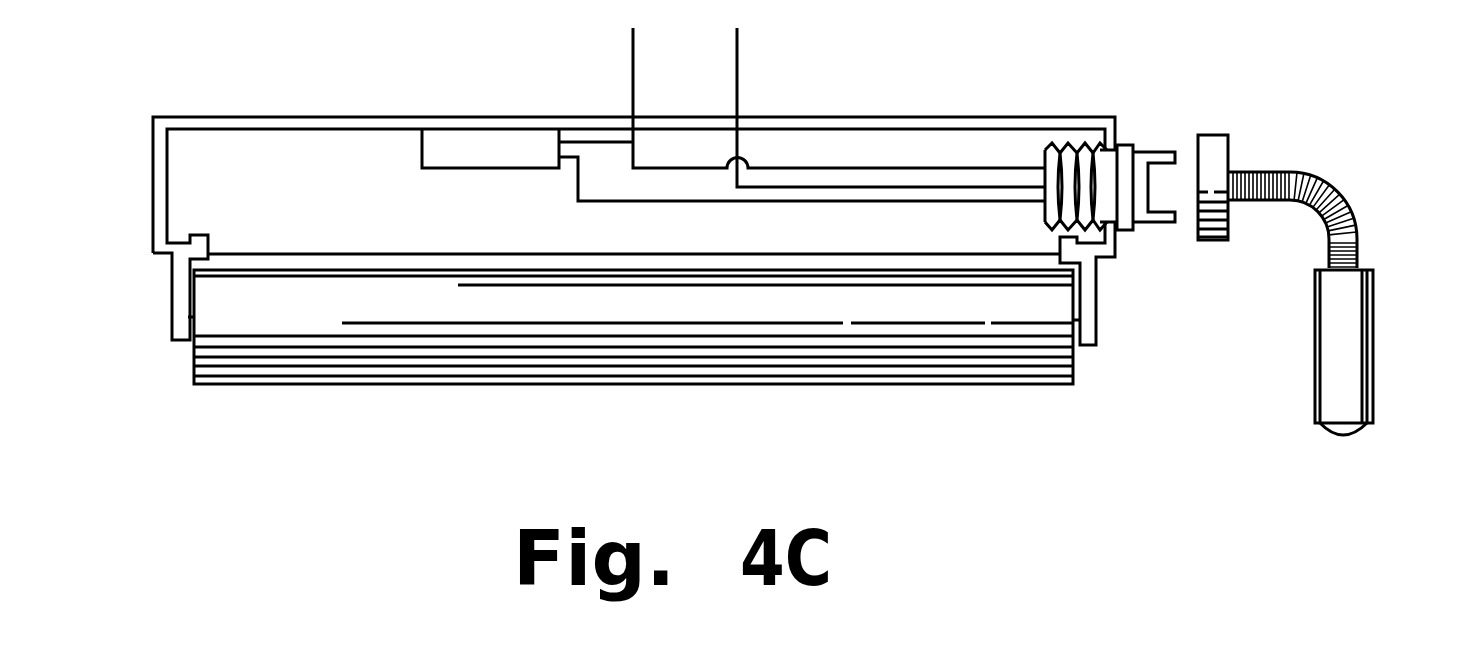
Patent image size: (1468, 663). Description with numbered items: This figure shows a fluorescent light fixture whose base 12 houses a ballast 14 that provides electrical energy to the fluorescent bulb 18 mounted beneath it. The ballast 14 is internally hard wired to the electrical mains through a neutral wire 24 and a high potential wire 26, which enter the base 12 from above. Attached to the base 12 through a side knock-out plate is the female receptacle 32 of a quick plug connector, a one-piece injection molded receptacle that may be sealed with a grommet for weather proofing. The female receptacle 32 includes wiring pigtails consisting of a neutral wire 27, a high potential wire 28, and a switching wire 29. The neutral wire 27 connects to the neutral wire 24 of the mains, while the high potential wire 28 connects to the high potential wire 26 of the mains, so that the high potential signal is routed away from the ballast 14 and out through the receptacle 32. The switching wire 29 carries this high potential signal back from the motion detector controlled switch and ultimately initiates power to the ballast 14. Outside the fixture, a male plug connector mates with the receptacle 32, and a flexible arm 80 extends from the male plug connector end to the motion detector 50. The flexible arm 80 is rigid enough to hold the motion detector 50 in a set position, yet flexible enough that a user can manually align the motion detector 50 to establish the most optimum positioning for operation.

The base 12 is at (257, 192).
The ballast 14 is at (498, 160).
The fluorescent bulb 18 is at (798, 374).
The neutral wire 24 is at (633, 83).
The high potential wire 26 is at (738, 80).
The neutral wire 27 is at (792, 167).
The high potential wire 28 is at (875, 187).
The switching wire 29 is at (832, 202).
The female receptacle 32 is at (1126, 162).
The flexible arm 80 is at (1308, 177).
The motion detector 50 is at (1343, 343).